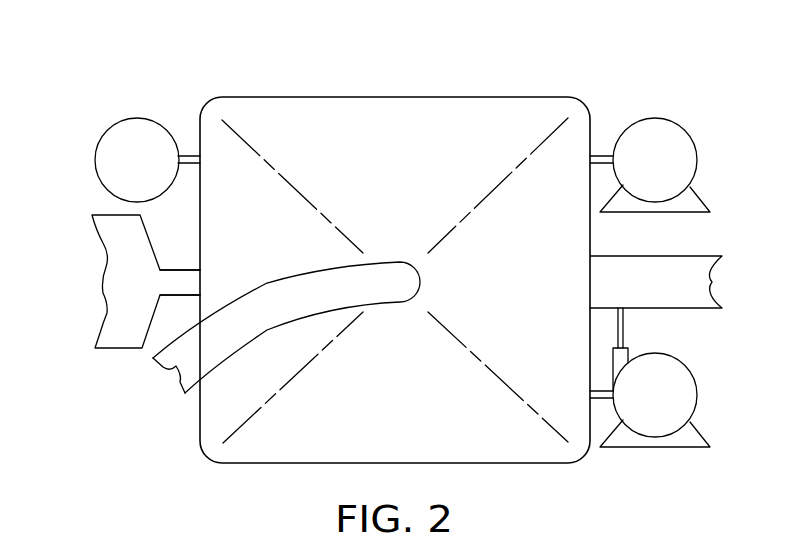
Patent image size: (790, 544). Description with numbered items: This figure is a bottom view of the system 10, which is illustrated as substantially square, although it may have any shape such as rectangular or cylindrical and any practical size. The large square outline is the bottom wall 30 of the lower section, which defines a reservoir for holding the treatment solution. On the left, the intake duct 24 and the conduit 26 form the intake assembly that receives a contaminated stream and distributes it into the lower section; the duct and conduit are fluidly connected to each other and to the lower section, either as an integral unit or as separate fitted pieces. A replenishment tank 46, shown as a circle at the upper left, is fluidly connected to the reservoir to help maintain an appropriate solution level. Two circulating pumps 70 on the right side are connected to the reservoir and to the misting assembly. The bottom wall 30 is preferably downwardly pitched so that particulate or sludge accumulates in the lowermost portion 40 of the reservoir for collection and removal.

The system 10 is at (366, 77).
The intake duct 24 is at (107, 328).
The conduit 26 is at (186, 277).
The bottom wall 30 is at (178, 371).
The lowermost portion 40 is at (490, 294).
The replenishment tank 46 is at (152, 171).
The circulating pump 70 is at (669, 172).